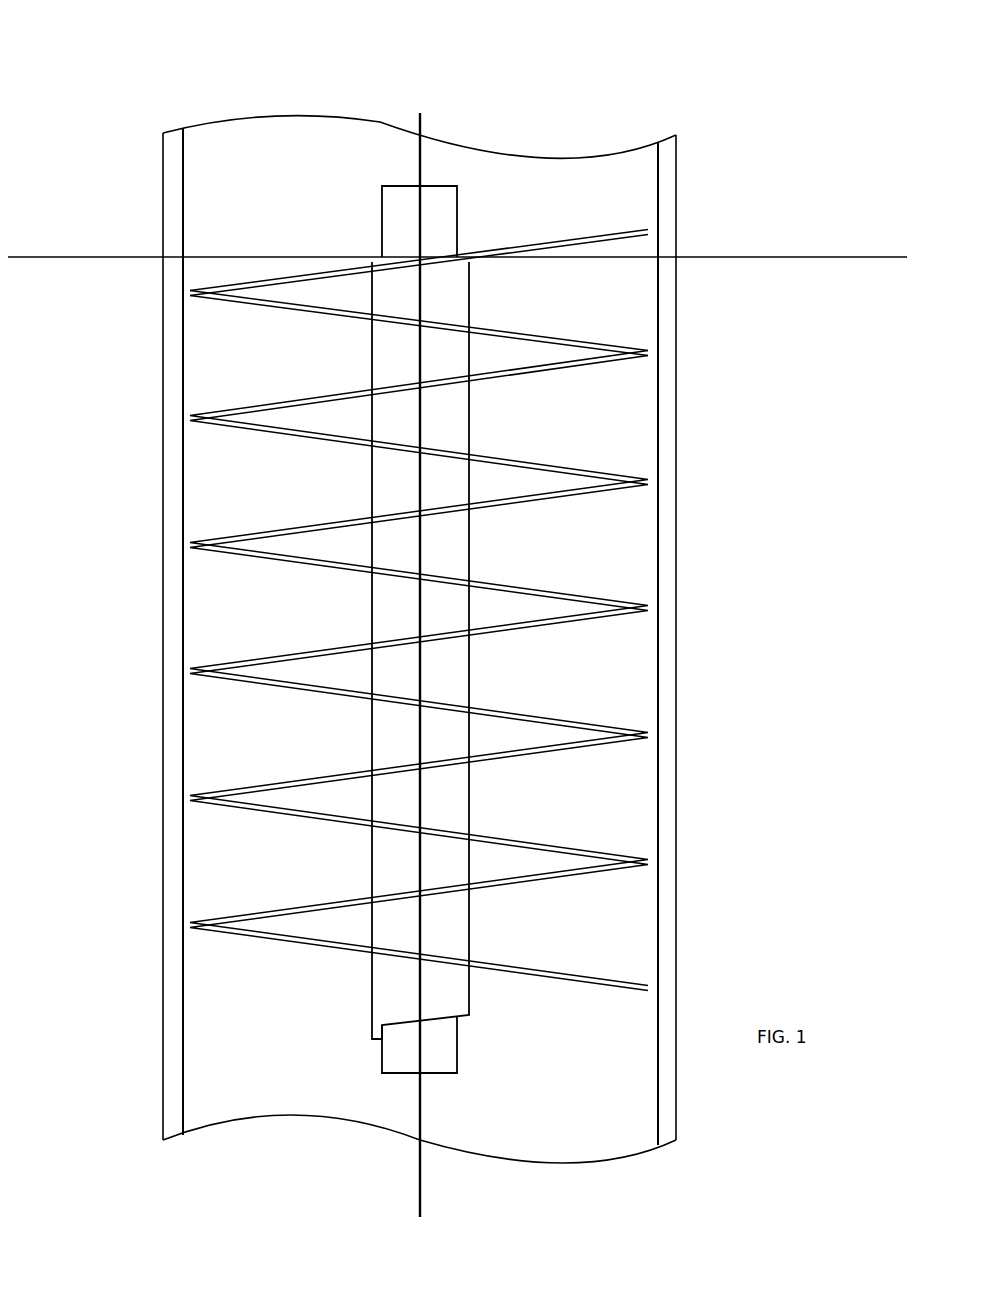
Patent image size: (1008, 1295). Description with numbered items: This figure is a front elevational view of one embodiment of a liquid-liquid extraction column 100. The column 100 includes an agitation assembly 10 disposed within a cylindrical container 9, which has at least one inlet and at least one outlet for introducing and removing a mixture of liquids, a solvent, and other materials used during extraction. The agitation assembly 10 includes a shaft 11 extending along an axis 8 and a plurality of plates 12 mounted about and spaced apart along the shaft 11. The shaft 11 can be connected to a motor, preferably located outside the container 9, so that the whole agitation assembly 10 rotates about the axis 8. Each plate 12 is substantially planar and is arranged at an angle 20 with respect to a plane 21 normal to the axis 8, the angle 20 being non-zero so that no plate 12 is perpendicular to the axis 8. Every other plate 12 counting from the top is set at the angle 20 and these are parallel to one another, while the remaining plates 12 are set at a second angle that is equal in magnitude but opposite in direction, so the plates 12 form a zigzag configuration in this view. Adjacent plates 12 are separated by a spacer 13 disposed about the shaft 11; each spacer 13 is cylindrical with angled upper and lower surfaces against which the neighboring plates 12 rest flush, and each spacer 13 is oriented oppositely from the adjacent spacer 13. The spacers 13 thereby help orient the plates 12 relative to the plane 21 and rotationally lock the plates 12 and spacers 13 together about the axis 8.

The liquid-liquid extraction column 100 is at (208, 80).
The agitation assembly 10 is at (605, 168).
The axis 8 is at (422, 123).
The shaft 11 is at (438, 200).
The spacer 13 is at (447, 363).
The plate 12 is at (655, 226).
The plane 21 is at (708, 257).
The angle 20 is at (268, 262).
The cylindrical container 9 is at (650, 337).